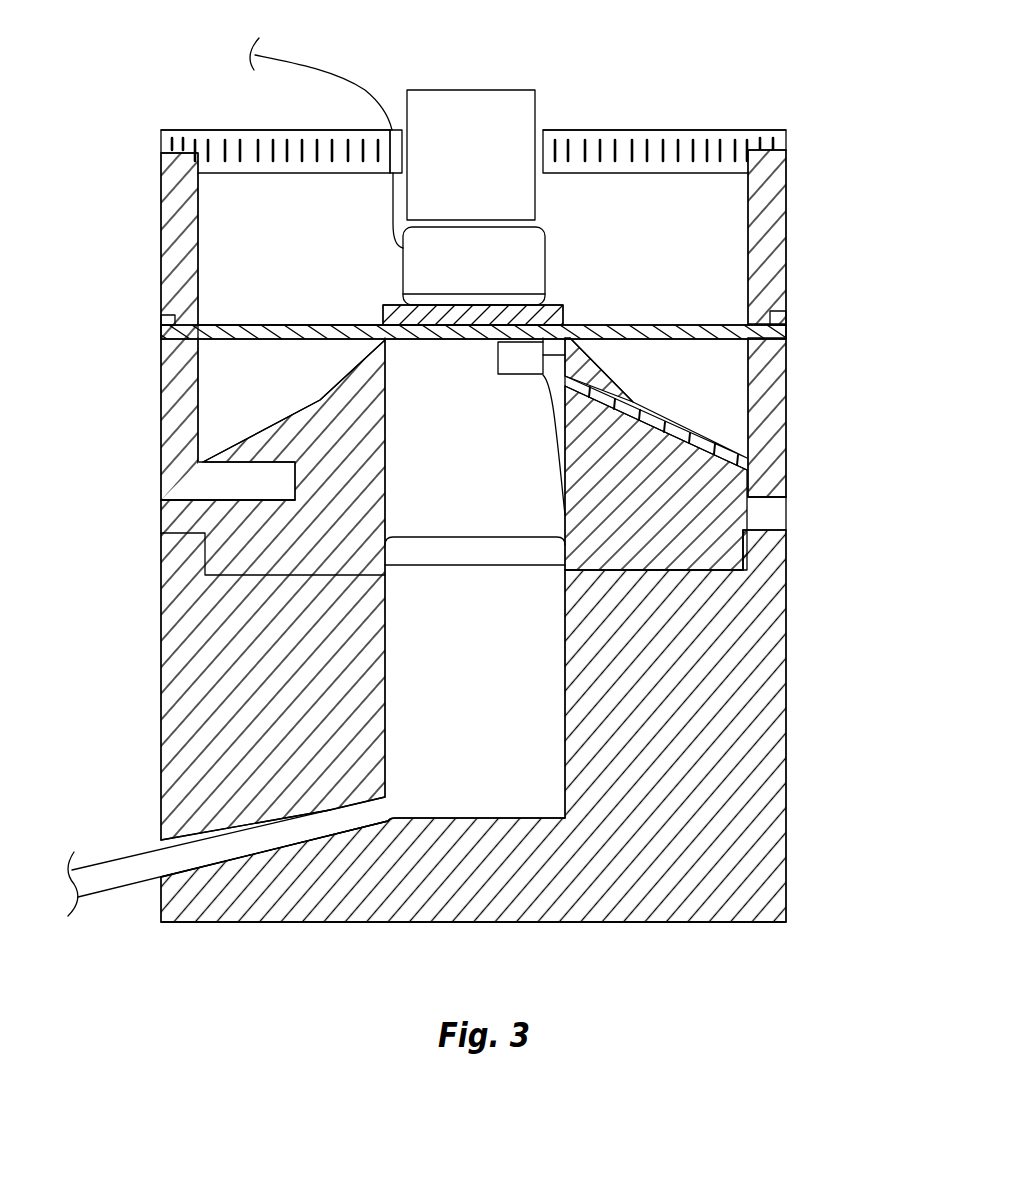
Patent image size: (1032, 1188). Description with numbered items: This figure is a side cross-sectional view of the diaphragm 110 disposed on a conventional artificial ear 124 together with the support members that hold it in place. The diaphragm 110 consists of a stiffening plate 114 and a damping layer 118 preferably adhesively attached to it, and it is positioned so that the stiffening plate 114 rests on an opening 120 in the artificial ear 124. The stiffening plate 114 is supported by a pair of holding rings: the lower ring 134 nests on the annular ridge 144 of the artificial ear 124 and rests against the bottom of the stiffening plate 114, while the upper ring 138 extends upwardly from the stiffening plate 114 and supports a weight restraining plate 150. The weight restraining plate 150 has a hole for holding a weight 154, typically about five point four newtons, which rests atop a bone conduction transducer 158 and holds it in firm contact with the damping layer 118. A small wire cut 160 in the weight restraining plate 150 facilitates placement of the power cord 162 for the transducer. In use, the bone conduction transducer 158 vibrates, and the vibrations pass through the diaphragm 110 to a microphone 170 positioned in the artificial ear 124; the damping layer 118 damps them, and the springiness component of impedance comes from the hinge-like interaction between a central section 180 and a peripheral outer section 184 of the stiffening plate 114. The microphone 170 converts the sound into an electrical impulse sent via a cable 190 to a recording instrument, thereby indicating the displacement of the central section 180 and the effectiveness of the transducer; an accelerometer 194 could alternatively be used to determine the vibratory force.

The diaphragm 110 is at (709, 307).
The stiffening plate 114 is at (788, 316).
The damping layer 118 is at (565, 312).
The opening 120 is at (471, 342).
The artificial ear 124 is at (783, 596).
The lower ring 134 is at (780, 412).
The upper ring 138 is at (778, 201).
The annular ridge 144 is at (787, 496).
The weight restraining plate 150 is at (686, 134).
The weight 154 is at (513, 116).
The bone conduction transducer 158 is at (522, 257).
The wire cut 160 is at (395, 127).
The power cord 162 is at (313, 64).
The microphone 170 is at (400, 684).
The central section 180 is at (424, 340).
The peripheral outer section 184 is at (303, 326).
The cable 190 is at (132, 856).
The accelerometer 194 is at (578, 345).